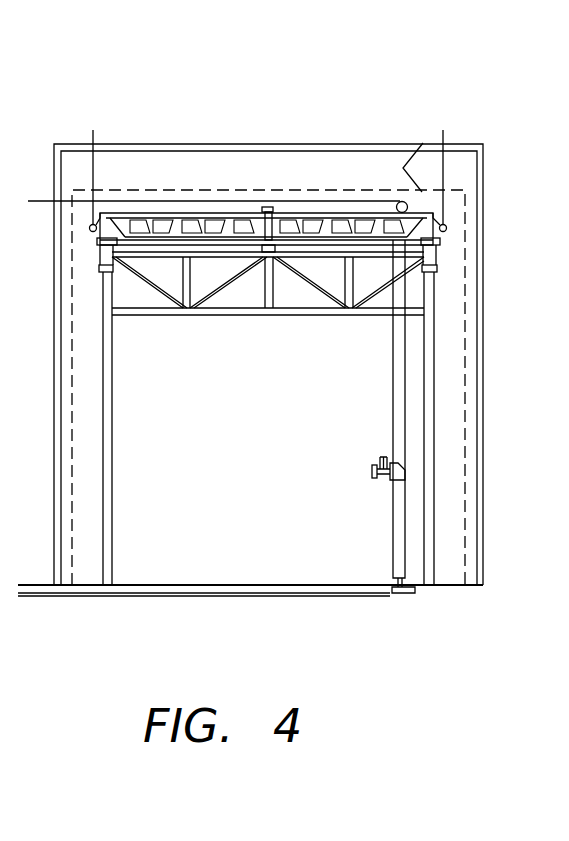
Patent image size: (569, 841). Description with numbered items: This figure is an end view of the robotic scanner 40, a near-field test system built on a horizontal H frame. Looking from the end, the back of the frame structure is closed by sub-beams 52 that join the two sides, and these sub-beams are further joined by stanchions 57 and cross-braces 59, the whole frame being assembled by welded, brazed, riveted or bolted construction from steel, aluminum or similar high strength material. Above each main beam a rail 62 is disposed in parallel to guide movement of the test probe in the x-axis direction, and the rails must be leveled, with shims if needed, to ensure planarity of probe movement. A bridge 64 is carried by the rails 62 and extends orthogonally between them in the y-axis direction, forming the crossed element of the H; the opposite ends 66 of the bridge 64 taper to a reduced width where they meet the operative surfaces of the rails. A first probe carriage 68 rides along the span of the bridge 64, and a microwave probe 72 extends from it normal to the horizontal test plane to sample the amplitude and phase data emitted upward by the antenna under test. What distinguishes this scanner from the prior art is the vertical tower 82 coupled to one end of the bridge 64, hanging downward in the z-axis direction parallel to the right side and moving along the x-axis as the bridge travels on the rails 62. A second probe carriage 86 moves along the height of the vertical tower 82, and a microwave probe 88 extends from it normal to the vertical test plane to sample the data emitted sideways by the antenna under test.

The robotic scanner 40 is at (197, 124).
The sub-beams 52 is at (150, 312).
The stanchions 57 is at (350, 275).
The cross-braces 59 is at (333, 292).
The rail 62 is at (434, 240).
The bridge 64 is at (246, 212).
The opposite ends of the bridge 66 is at (110, 212).
The first probe carriage 68 is at (271, 207).
The microwave probe 72 is at (273, 253).
The vertical tower 82 is at (400, 388).
The second probe carriage 86 is at (405, 473).
The microwave probe 88 is at (372, 471).